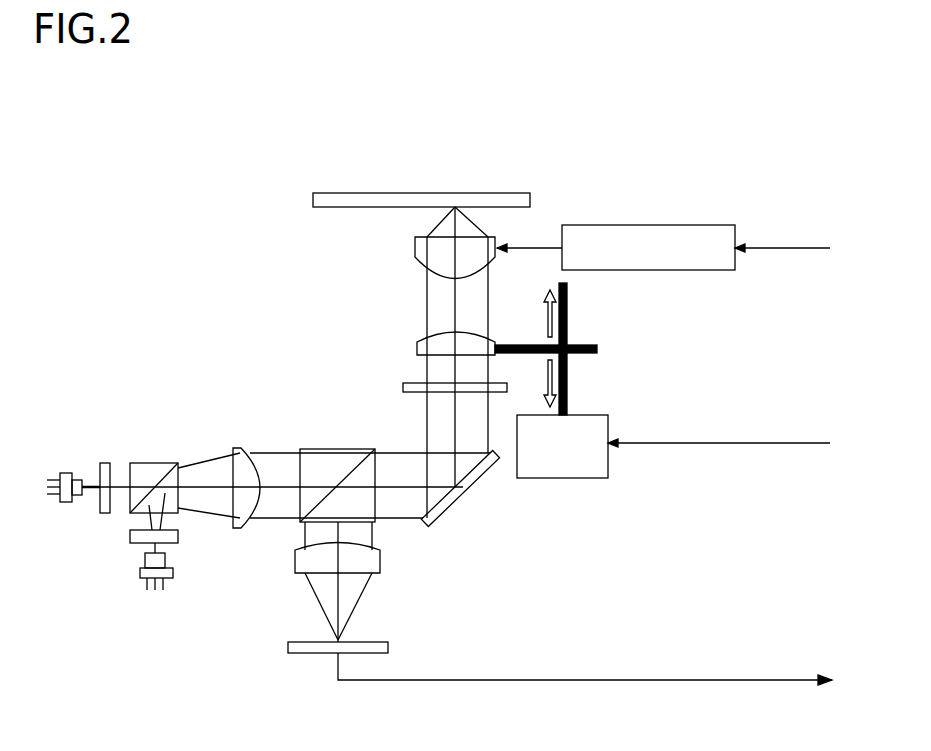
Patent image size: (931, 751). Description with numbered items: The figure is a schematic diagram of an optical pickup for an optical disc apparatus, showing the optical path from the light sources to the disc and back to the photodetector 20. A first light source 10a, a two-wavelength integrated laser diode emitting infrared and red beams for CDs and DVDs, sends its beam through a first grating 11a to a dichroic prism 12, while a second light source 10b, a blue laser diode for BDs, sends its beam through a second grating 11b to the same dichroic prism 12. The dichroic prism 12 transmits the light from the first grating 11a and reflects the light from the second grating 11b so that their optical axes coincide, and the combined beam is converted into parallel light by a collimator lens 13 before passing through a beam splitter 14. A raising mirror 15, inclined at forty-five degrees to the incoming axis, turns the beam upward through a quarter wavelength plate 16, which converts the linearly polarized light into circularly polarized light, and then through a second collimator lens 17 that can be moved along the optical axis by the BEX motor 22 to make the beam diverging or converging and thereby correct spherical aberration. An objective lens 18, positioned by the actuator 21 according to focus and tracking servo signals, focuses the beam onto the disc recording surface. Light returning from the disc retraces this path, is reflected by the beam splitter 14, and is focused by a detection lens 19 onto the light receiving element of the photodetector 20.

The first light source 10a is at (73, 469).
The second light source 10b is at (177, 571).
The first grating 11a is at (113, 470).
The second grating 11b is at (175, 529).
The dichroic prism 12 is at (154, 469).
The collimator lens 13 is at (246, 469).
The beam splitter 14 is at (337, 466).
The raising mirror 15 is at (465, 495).
The quarter wavelength plate 16 is at (470, 379).
The collimator lens 17 is at (472, 337).
The objective lens 18 is at (472, 249).
The detection lens 19 is at (354, 553).
The photodetector 20 is at (353, 638).
The actuator 21 is at (663, 228).
The BEX motor 22 is at (662, 380).